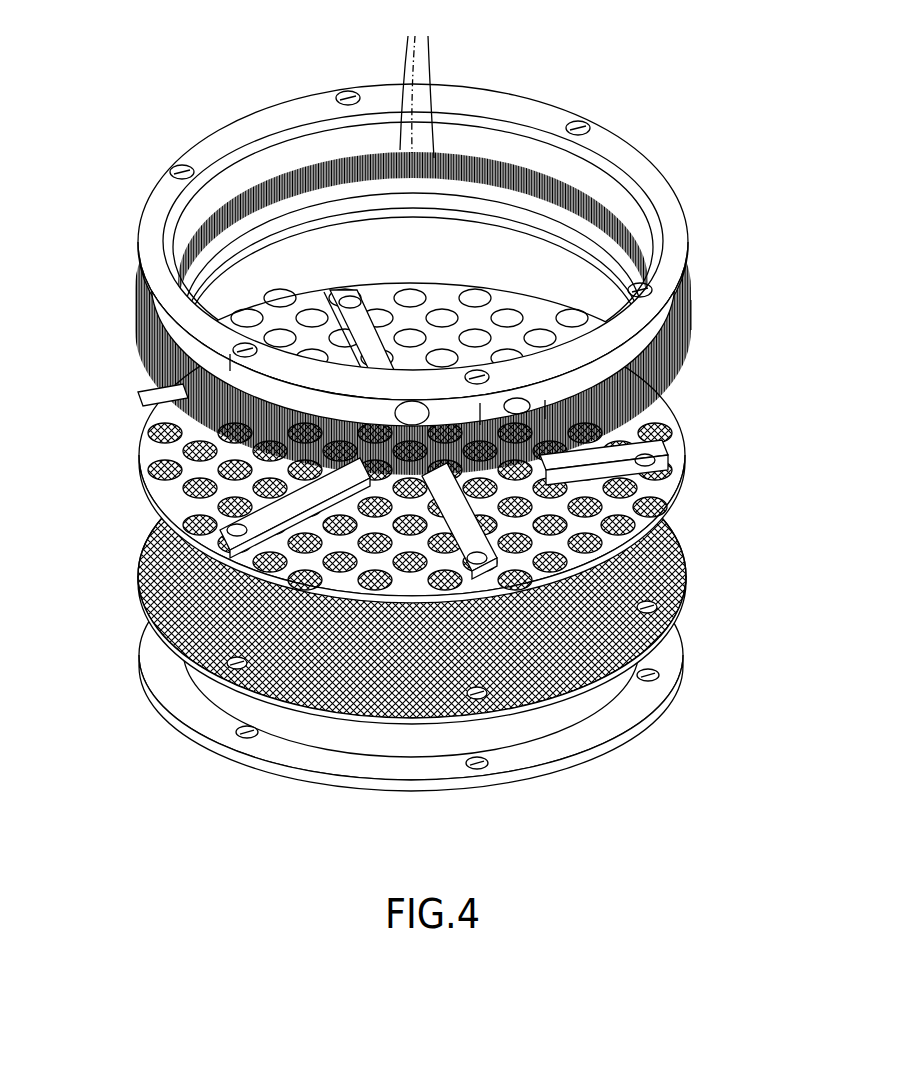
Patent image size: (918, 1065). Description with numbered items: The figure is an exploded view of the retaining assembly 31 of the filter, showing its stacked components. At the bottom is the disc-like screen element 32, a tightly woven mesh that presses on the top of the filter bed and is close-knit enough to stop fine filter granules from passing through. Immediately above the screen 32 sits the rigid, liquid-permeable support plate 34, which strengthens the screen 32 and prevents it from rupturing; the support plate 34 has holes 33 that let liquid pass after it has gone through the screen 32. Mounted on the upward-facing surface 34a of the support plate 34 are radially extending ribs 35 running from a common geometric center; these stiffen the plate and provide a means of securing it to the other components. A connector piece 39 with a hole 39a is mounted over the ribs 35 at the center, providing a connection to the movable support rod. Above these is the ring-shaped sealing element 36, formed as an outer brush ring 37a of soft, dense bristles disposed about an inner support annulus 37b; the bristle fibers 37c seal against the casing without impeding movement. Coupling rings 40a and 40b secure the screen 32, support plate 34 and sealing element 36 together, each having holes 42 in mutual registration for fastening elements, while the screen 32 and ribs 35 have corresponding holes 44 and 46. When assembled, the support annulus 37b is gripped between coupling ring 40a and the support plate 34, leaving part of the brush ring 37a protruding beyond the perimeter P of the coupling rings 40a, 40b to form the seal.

The retaining assembly 31 is at (106, 72).
The screen element 32 is at (680, 540).
The holes 33 is at (293, 318).
The support plate 34 is at (675, 408).
The upward-facing surface 34a is at (540, 302).
The ribs 35 is at (143, 476).
The sealing element 36 is at (683, 327).
The brush ring 37a is at (137, 332).
The support annulus 37b is at (637, 213).
The bristle fibers 37c is at (415, 80).
The connector piece 39 is at (456, 403).
The hole 39a is at (412, 410).
The coupling ring 40a is at (643, 160).
The coupling ring 40b is at (618, 733).
The holes 42 is at (349, 94).
The holes 44 is at (655, 607).
The holes 46 is at (348, 296).
The perimeter P is at (256, 107).